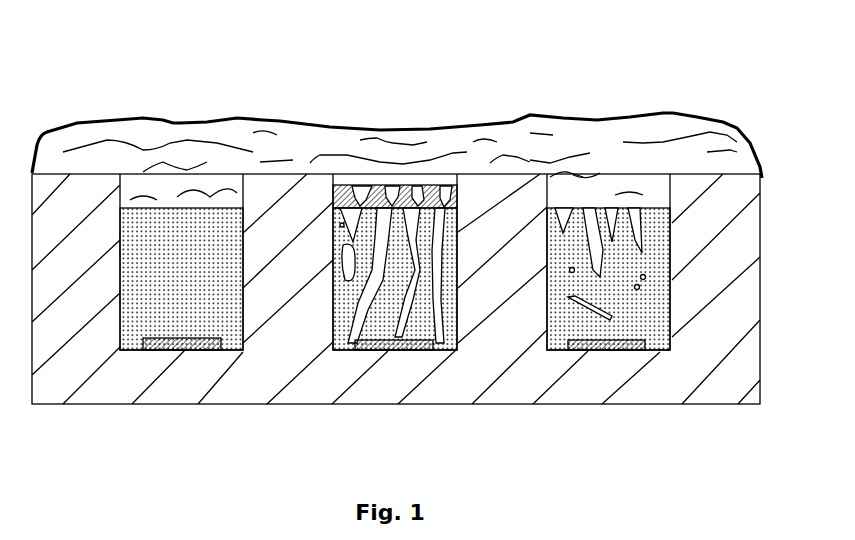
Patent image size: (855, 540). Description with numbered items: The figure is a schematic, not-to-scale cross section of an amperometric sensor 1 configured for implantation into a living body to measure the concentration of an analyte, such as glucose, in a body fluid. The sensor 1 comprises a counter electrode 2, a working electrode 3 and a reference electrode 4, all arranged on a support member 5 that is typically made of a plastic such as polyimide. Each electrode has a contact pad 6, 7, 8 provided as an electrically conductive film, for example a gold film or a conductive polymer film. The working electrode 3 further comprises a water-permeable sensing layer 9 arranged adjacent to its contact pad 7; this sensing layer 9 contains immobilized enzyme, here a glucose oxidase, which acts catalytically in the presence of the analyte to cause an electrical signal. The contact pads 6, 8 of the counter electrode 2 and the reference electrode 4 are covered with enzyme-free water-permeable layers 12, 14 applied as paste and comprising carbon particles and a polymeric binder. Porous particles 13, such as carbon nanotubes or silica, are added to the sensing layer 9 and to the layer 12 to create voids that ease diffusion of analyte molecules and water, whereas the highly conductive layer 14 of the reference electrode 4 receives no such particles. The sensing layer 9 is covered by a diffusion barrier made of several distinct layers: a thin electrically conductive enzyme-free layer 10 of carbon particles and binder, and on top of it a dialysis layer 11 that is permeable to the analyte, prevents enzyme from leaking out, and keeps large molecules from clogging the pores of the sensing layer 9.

The amperometric sensor 1 is at (500, 103).
The counter electrode 2 is at (670, 353).
The working electrode 3 is at (457, 353).
The reference electrode 4 is at (243, 353).
The support member 5 is at (760, 362).
The contact pad 6 is at (588, 352).
The contact pad 7 is at (380, 352).
The contact pad 8 is at (163, 350).
The sensing layer 9 is at (448, 352).
The electrically conductive enzyme-free layer 10 is at (435, 200).
The dialysis layer 11 is at (175, 142).
The water-permeable layer 12 is at (647, 307).
The porous particles 13 is at (343, 225).
The water-permeable layer 14 is at (220, 305).